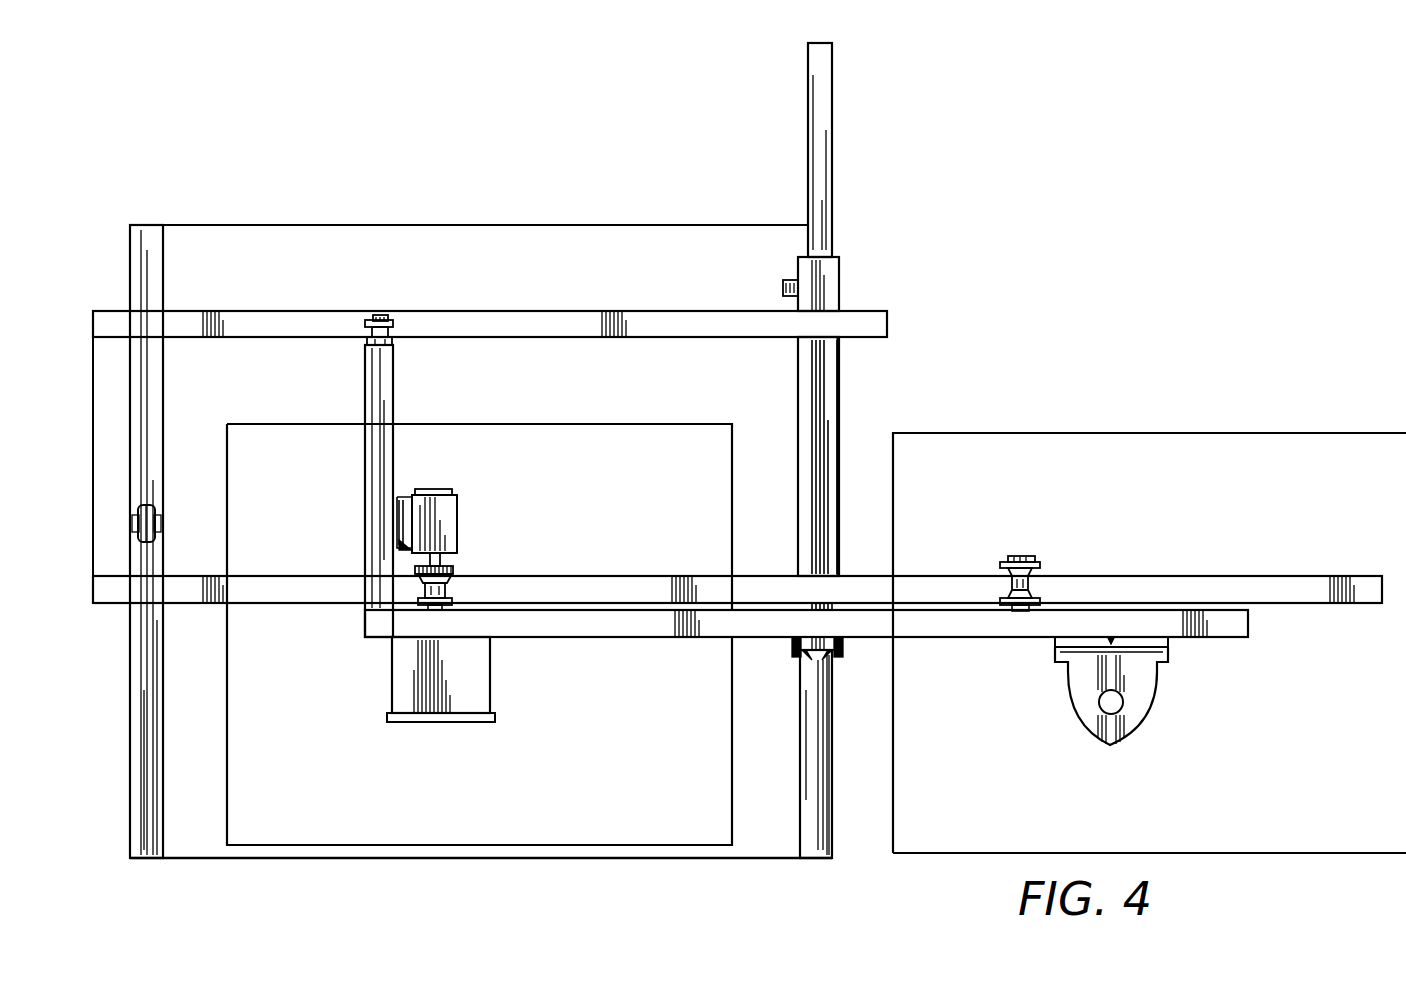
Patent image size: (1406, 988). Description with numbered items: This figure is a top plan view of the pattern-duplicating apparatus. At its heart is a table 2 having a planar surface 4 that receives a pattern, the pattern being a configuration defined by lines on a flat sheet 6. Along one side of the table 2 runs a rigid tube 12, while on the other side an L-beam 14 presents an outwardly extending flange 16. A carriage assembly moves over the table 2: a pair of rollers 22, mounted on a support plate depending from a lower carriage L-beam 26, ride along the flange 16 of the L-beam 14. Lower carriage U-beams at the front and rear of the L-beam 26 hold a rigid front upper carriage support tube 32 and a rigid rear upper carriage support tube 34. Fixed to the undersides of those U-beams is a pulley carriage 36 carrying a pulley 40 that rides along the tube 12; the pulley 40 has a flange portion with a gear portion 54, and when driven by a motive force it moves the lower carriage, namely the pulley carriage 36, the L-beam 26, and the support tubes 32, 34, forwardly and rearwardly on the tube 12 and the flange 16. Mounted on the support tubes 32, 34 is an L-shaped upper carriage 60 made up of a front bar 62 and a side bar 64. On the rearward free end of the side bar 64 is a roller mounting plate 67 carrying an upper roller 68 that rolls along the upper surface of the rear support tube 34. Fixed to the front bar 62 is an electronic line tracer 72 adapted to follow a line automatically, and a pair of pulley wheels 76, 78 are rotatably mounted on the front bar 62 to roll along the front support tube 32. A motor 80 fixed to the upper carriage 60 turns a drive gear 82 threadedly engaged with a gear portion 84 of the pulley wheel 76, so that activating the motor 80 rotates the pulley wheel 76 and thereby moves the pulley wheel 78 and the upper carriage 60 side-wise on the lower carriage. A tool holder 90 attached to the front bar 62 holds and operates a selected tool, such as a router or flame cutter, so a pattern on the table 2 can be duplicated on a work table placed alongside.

The table 2 is at (525, 232).
The planar surface 4 is at (556, 398).
The flat sheet 6 is at (600, 497).
The rigid tube 12 is at (832, 212).
The L-beam 14 is at (140, 858).
The flange 16 is at (130, 272).
The rollers 22 is at (143, 508).
The lower carriage L-beam 26 is at (110, 498).
The front upper carriage support tube 32 is at (112, 598).
The rear upper carriage support tube 34 is at (107, 312).
The pulley carriage 36 is at (833, 397).
The pulley 40 is at (835, 650).
The gear portion 54 is at (797, 647).
The upper carriage 60 is at (393, 467).
The front bar 62 is at (612, 628).
The side bar 64 is at (365, 495).
The roller mounting plate 67 is at (388, 343).
The upper roller 68 is at (395, 325).
The electronic line tracer 72 is at (483, 686).
The pulley wheel 76 is at (452, 590).
The pulley wheel 78 is at (1030, 592).
The motor 80 is at (457, 515).
The drive gear 82 is at (450, 570).
The gear portion 84 is at (455, 577).
The tool holder 90 is at (1160, 681).